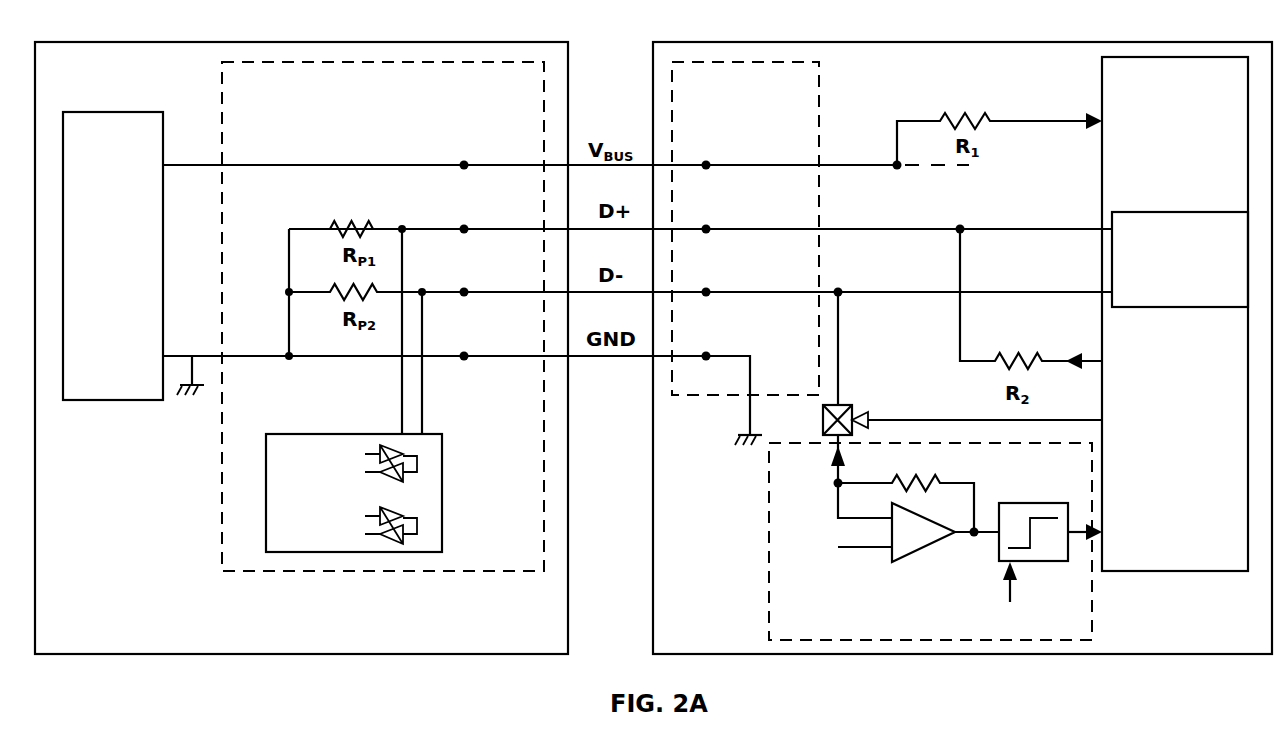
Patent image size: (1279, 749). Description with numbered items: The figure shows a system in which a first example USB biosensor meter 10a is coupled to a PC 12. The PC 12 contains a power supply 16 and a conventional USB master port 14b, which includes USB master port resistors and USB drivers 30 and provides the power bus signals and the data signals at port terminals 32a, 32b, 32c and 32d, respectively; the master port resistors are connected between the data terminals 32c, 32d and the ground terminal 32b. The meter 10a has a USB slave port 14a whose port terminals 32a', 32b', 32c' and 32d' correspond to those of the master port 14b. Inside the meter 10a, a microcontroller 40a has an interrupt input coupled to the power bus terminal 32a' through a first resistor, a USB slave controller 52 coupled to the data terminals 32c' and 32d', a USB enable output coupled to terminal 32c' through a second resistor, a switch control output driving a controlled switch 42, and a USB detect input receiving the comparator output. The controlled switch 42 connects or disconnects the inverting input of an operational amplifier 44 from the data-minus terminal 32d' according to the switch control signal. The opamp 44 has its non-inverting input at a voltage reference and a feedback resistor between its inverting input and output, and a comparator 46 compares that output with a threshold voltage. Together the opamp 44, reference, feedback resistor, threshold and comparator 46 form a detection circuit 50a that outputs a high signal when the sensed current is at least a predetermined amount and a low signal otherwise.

The PC 12 is at (417, 42).
The USB biosensor meter 10a is at (1175, 42).
The power supply 16 is at (122, 112).
The USB slave port 14a is at (819, 112).
The USB master port 14b is at (222, 548).
The USB drivers 30 is at (294, 434).
The port terminal 32a is at (492, 154).
The port terminal 32b is at (493, 345).
The port terminal 32c is at (491, 218).
The port terminal 32d is at (493, 281).
The port terminal 32a' is at (737, 154).
The port terminal 32b' is at (737, 345).
The port terminal 32c' is at (736, 218).
The port terminal 32d' is at (737, 281).
The microcontroller 40a is at (1102, 92).
The USB slave controller 52 is at (1140, 212).
The controlled switch 42 is at (848, 405).
The operational amplifier 44 is at (913, 557).
The comparator 46 is at (1040, 562).
The detection circuit 50a is at (909, 537).